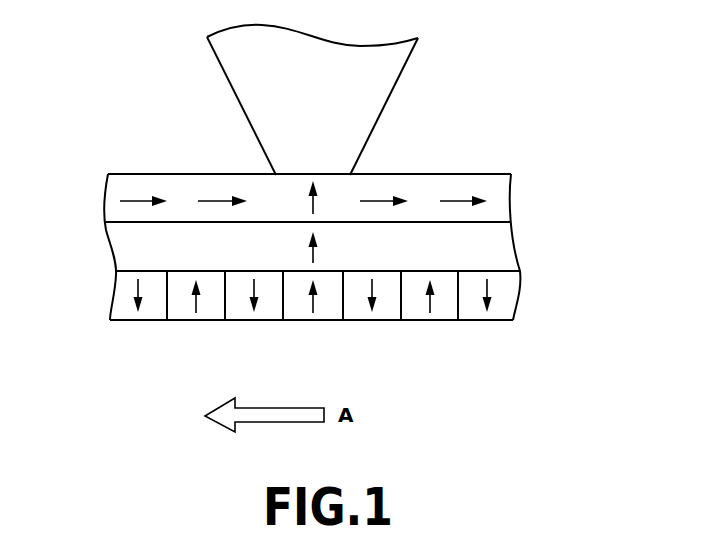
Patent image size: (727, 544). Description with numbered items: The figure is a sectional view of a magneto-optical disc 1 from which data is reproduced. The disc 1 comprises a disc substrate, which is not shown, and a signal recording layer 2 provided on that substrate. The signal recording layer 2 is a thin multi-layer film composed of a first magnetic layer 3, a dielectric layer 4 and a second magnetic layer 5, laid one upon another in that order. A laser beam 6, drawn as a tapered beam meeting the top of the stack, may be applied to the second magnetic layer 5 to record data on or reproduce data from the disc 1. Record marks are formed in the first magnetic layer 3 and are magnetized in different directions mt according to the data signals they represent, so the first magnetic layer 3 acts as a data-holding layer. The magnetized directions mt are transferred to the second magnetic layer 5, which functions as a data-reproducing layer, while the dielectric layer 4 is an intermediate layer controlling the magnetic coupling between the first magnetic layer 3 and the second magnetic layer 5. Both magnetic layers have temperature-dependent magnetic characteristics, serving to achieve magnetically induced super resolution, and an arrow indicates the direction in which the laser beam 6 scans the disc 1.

The magneto-optical disc 1 is at (84, 113).
The signal recording layer 2 is at (583, 170).
The first magnetic layer 3 is at (500, 297).
The dielectric layer 4 is at (500, 245).
The second magnetic layer 5 is at (511, 203).
The laser beam 6 is at (410, 88).
The magnetized directions mt is at (316, 207).